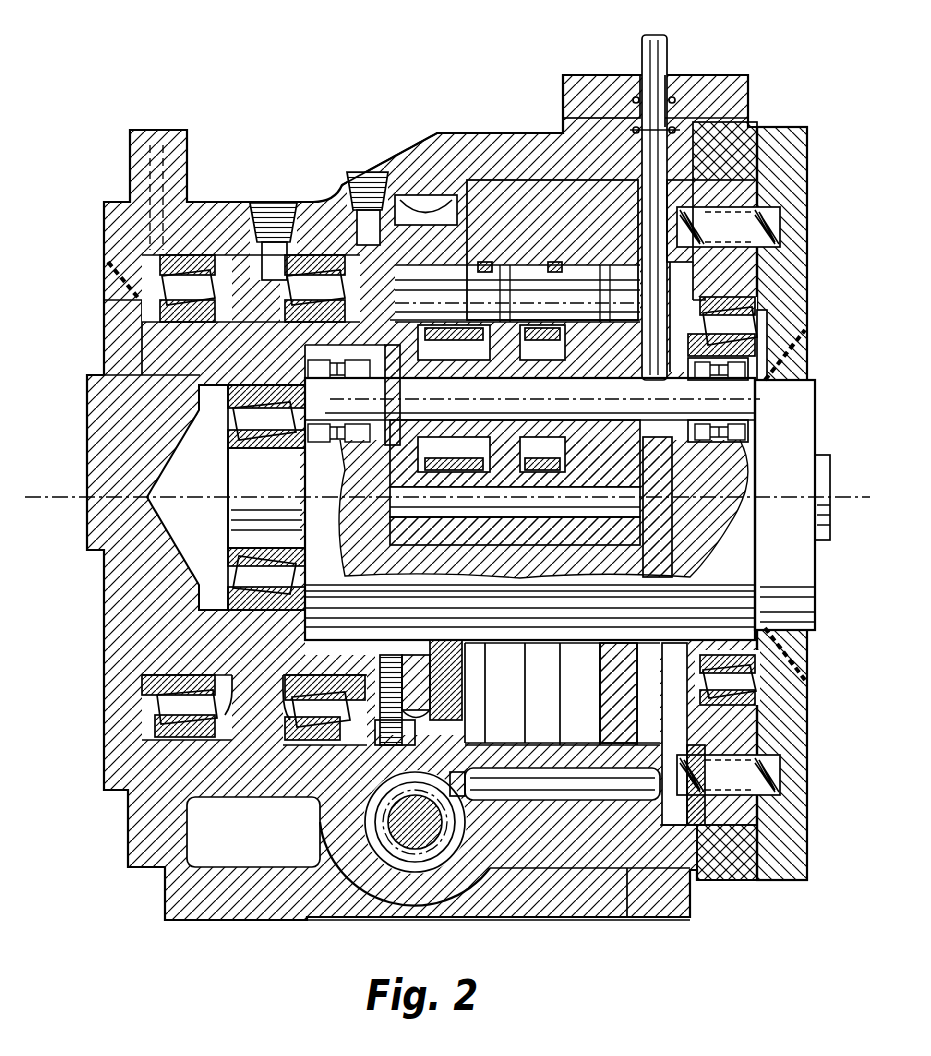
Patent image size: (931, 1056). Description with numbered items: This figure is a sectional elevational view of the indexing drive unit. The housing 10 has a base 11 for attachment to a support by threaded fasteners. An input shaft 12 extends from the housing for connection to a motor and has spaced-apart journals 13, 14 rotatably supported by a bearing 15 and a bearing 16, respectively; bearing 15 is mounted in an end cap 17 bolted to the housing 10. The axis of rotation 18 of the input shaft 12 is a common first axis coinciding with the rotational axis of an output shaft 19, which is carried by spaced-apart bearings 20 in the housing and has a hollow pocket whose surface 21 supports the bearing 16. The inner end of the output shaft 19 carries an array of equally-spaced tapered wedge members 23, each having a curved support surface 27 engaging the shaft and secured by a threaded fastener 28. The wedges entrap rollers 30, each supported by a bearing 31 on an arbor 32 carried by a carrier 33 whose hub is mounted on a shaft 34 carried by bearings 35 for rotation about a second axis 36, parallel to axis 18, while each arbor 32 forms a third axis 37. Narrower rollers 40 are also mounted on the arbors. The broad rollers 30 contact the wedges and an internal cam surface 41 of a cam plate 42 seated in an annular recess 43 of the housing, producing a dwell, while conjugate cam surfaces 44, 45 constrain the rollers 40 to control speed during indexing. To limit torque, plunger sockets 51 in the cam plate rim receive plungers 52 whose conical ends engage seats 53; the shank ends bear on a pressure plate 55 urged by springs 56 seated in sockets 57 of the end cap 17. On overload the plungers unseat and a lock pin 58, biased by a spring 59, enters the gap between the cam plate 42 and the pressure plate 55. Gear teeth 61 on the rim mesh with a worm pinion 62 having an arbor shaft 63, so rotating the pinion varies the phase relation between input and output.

The housing 10 is at (722, 880).
The base 11 is at (265, 922).
The input shaft 12 is at (785, 505).
The journal 13 is at (530, 480).
The journal 14 is at (226, 497).
The bearing 15 is at (695, 672).
The bearing 16 is at (250, 605).
The end cap 17 is at (790, 880).
The axis of rotation 18 is at (838, 497).
The output shaft 19 is at (110, 410).
The bearings 20 is at (185, 262).
The surface 21 is at (245, 388).
The tapered wedge members 23 is at (455, 680).
The curved support surface 27 is at (330, 722).
The threaded fastener 28 is at (380, 752).
The rollers 30 is at (455, 360).
The bearing 31 is at (450, 290).
The arbor 32 is at (608, 512).
The carrier 33 is at (505, 362).
The shaft 34 is at (745, 410).
The bearings 35 is at (320, 440).
The second axis 36 is at (770, 400).
The third axis 37 is at (392, 282).
The rollers 40 is at (540, 335).
The internal cam surface 41 is at (483, 265).
The cam plate 42 is at (552, 250).
The annular recess 43 is at (537, 182).
The conjugate cam surface 44 is at (553, 265).
The conjugate cam surface 45 is at (545, 398).
The plunger sockets 51 is at (552, 795).
The plungers 52 is at (562, 784).
The seats 53 is at (462, 780).
The pressure plate 55 is at (670, 818).
The springs 56 is at (780, 227).
The socket 57 is at (742, 247).
The lock pin 58 is at (665, 58).
The spring 59 is at (635, 82).
The gear teeth 61 is at (418, 212).
The worm pinion 62 is at (452, 832).
The arbor shaft 63 is at (408, 848).